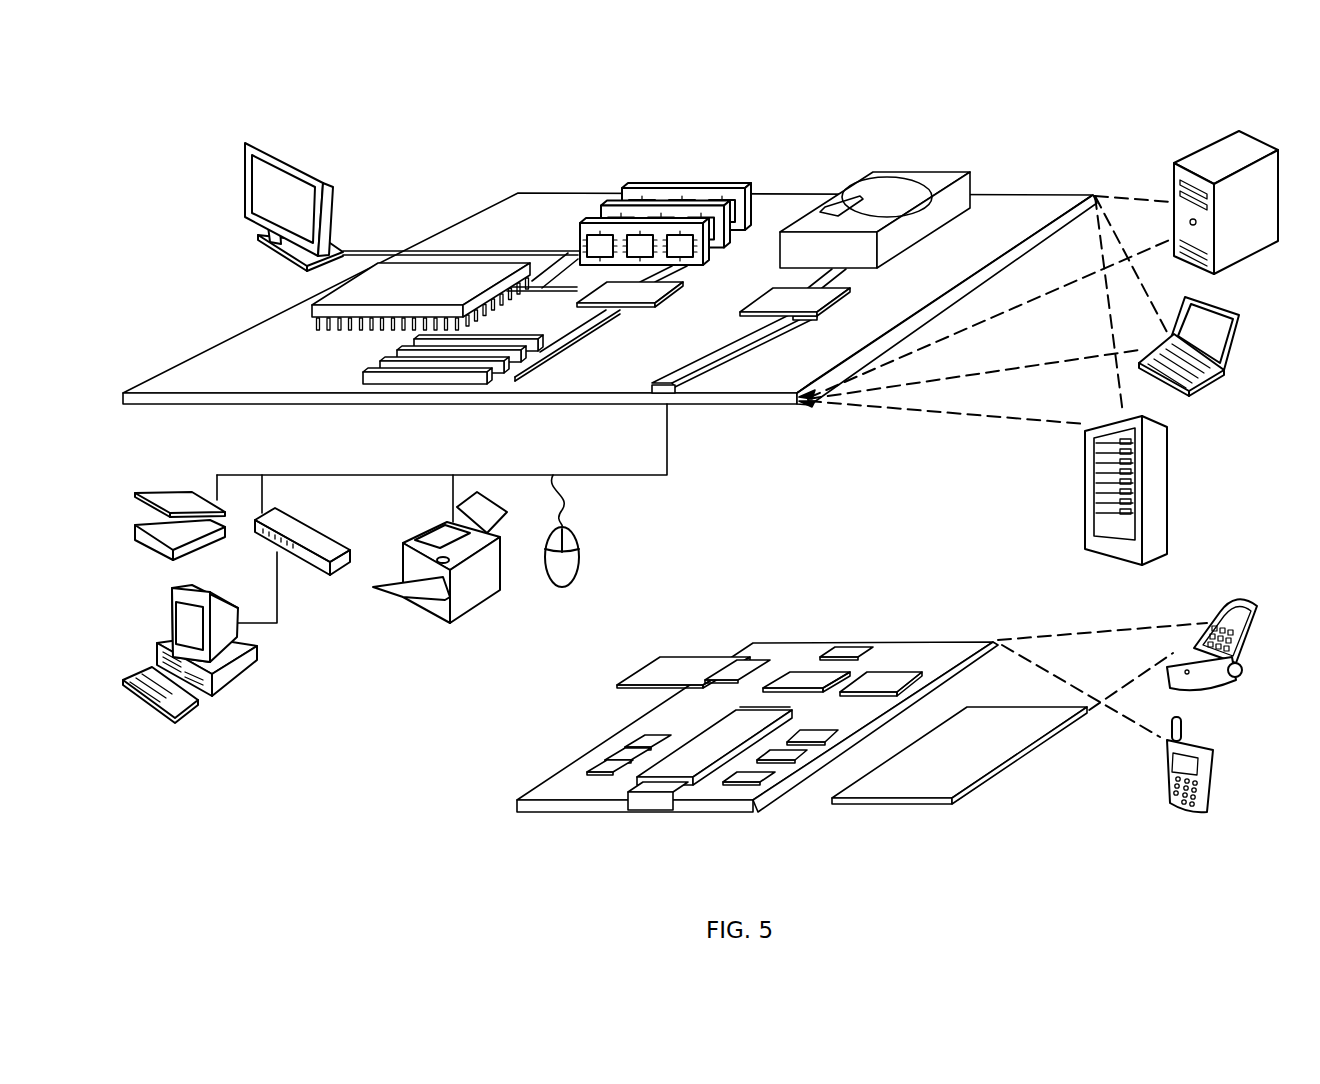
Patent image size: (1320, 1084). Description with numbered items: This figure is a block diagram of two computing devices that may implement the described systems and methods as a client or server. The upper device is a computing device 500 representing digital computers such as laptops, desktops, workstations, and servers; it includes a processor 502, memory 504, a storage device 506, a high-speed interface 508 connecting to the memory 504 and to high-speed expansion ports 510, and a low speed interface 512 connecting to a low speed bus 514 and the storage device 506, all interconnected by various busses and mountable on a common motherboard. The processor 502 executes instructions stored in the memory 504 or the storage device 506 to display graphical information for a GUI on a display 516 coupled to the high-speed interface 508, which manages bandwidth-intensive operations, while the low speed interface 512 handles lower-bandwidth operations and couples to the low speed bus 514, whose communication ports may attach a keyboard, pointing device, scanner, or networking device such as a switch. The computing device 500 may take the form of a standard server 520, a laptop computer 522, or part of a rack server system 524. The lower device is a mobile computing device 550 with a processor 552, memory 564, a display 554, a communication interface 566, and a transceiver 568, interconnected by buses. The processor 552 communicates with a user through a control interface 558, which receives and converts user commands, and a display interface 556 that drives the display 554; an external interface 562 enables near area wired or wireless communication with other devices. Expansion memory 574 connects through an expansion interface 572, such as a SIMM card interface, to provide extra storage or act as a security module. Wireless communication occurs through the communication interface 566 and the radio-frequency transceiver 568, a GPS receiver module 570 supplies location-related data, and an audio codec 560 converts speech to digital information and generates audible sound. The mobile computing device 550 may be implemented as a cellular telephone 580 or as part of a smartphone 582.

The computing device 500 is at (437, 160).
The processor 502 is at (316, 309).
The memory 504 is at (643, 185).
The storage device 506 is at (867, 174).
The high-speed interface 508 is at (603, 293).
The high-speed expansion ports 510 is at (383, 365).
The low speed interface 512 is at (773, 295).
The low speed bus 514 is at (673, 392).
The display 516 is at (246, 146).
The standard server 520 is at (1173, 172).
The laptop computer 522 is at (1240, 314).
The rack server system 524 is at (1085, 513).
The computing device 550 is at (486, 815).
The processor 552 is at (687, 768).
The display 554 is at (920, 787).
The display interface 556 is at (753, 777).
The control interface 558 is at (790, 757).
The audio codec 560 is at (813, 735).
The external interface 562 is at (653, 800).
The memory 564 is at (605, 760).
The communication interface 566 is at (805, 677).
The transceiver 568 is at (880, 677).
The GPS receiver module 570 is at (855, 650).
The expansion interface 572 is at (728, 652).
The expansion memory 574 is at (663, 652).
The cellular telephone 580 is at (1220, 603).
The smartphone 582 is at (1165, 777).